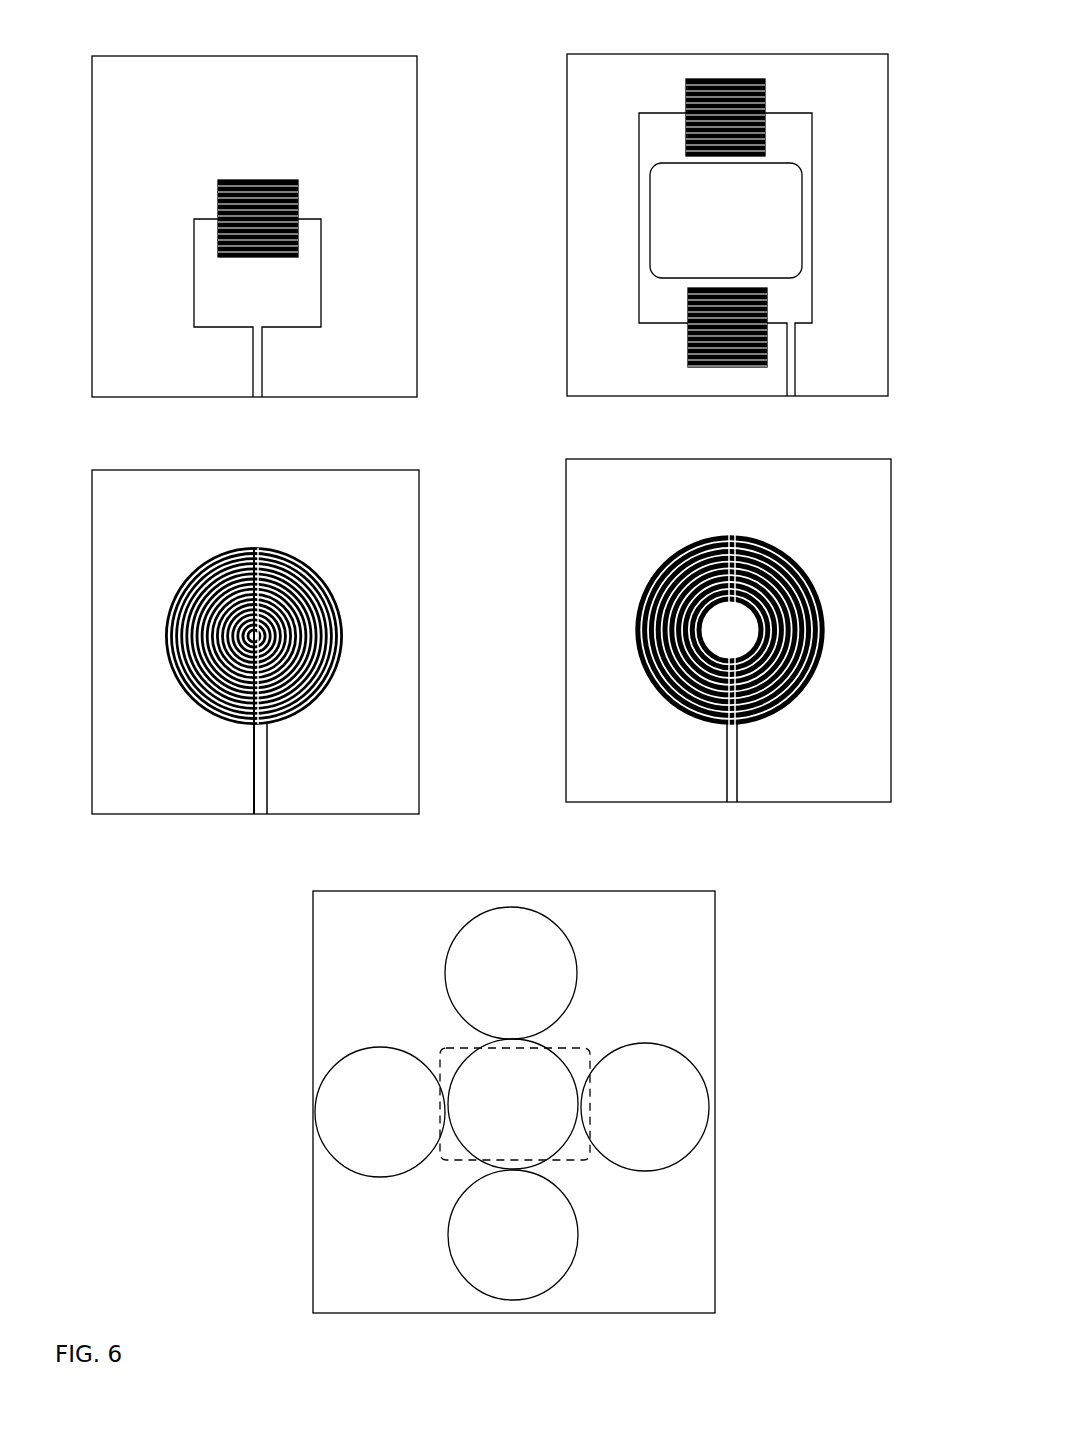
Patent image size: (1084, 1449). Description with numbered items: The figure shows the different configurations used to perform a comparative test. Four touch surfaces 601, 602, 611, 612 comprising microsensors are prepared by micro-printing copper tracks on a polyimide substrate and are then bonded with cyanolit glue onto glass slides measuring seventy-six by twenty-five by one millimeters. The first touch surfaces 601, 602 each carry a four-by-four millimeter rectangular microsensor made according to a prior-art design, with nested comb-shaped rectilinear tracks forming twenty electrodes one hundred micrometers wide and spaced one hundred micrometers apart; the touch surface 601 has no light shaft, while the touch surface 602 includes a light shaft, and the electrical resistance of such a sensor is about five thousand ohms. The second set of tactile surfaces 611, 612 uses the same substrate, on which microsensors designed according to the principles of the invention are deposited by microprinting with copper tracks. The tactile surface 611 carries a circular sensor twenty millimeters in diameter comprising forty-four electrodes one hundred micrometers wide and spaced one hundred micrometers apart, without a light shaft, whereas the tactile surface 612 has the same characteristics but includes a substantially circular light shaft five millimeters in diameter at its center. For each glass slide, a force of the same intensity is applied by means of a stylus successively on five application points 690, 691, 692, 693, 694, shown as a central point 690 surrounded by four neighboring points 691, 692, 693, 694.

The touch surface 601 is at (128, 54).
The touch surface 602 is at (853, 53).
The tactile surface 611 is at (138, 470).
The tactile surface 612 is at (827, 460).
The application point 690 is at (515, 1104).
The application point 691 is at (645, 1107).
The application point 692 is at (513, 1235).
The application point 693 is at (380, 1112).
The application point 694 is at (511, 973).